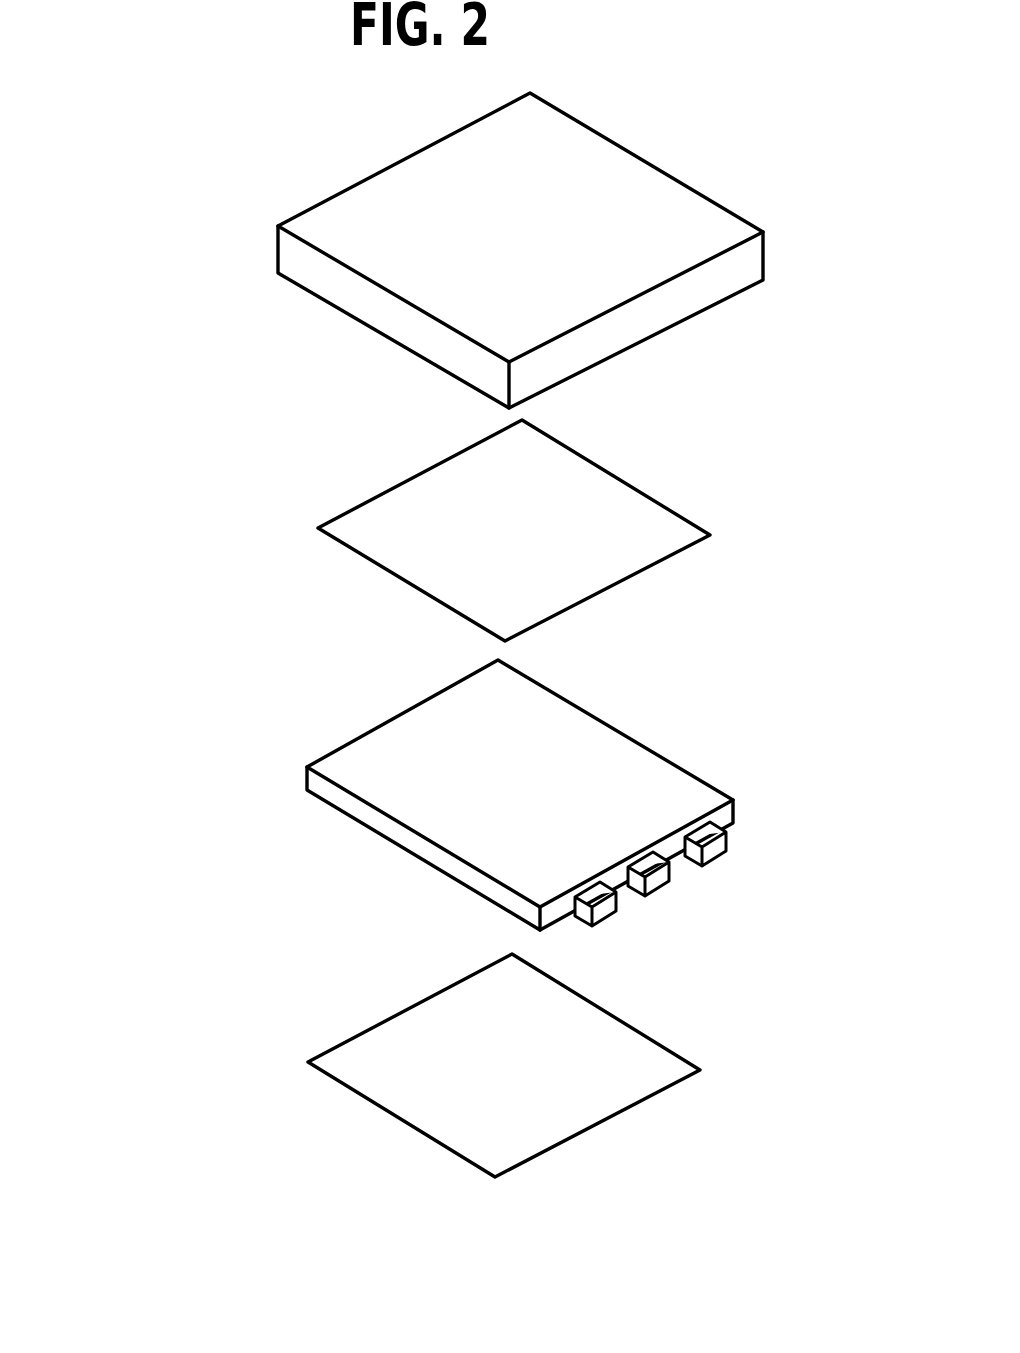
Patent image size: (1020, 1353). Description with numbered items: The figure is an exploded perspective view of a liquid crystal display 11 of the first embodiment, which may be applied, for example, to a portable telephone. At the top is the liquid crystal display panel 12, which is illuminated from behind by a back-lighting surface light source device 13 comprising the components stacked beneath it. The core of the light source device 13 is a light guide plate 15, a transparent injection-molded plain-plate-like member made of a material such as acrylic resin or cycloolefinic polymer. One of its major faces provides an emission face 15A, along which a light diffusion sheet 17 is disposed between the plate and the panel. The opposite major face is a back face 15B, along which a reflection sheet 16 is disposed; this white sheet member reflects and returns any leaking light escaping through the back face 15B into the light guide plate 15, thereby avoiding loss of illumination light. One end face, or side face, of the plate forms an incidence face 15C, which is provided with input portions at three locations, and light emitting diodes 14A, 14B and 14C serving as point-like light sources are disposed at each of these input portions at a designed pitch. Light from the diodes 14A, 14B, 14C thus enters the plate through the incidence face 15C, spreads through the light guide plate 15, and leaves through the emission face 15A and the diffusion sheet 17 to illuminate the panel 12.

The liquid crystal display 11 is at (320, 1188).
The liquid crystal display panel 12 is at (395, 203).
The surface light source device 13 is at (284, 1097).
The light emitting diode 14A is at (598, 912).
The light emitting diode 14B is at (651, 881).
The light emitting diode 14C is at (708, 851).
The light guide plate 15 is at (642, 760).
The emission face 15A is at (548, 728).
The back face 15B is at (390, 850).
The incidence face 15C is at (733, 812).
The reflection sheet 16 is at (630, 1063).
The light diffusion sheet 17 is at (632, 515).